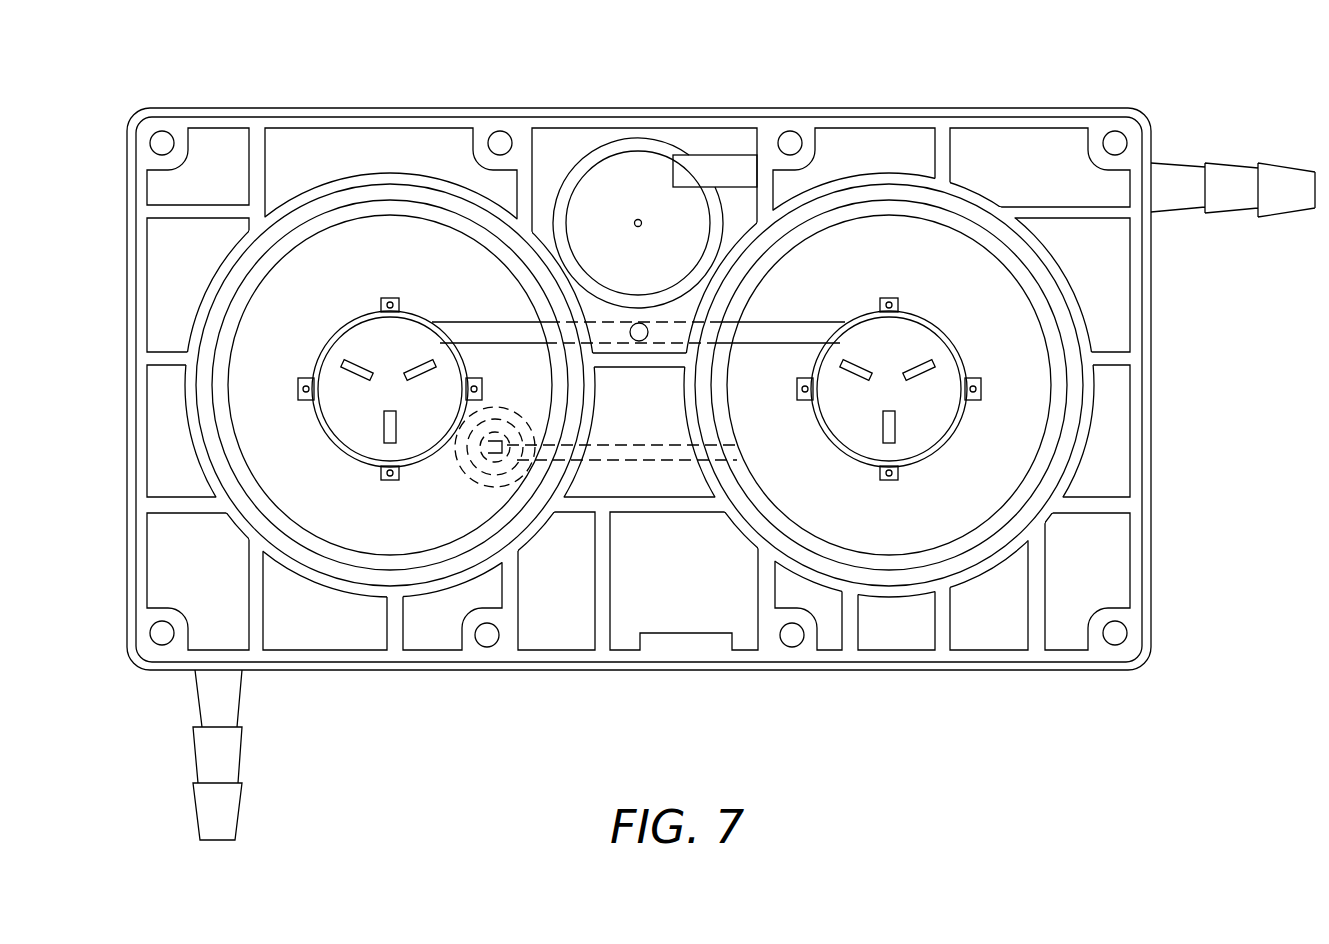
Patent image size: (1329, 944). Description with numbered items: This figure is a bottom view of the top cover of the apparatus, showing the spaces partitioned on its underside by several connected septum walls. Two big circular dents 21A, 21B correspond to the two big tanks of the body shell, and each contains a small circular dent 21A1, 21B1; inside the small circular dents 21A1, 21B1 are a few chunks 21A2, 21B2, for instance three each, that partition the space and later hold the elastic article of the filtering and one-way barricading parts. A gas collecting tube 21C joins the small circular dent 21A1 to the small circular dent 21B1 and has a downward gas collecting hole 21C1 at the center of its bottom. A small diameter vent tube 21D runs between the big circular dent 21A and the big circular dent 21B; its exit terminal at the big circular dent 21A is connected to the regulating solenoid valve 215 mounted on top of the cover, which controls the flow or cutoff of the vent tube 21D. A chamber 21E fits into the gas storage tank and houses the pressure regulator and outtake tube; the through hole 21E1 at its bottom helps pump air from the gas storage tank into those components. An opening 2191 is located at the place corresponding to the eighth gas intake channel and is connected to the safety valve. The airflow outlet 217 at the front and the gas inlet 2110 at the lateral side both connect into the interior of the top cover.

The big circular dent 21A is at (318, 268).
The small circular dent 21A1 is at (372, 335).
The chunks 21A2 is at (422, 365).
The chamber 21E is at (600, 160).
The center hole of boss 21E1 is at (639, 220).
The gas collecting hole 21C1 is at (643, 325).
The gas collecting tube 21C is at (782, 333).
The big circular dent 21B is at (870, 240).
The small circular dent 21B1 is at (905, 340).
The chunks 21B2 is at (930, 370).
The regulating solenoid valve 215 is at (488, 478).
The vent tube 21D is at (612, 455).
The opening 2191 is at (683, 645).
The gas inlet 2110 is at (1225, 180).
The airflow outlet 217 is at (232, 753).